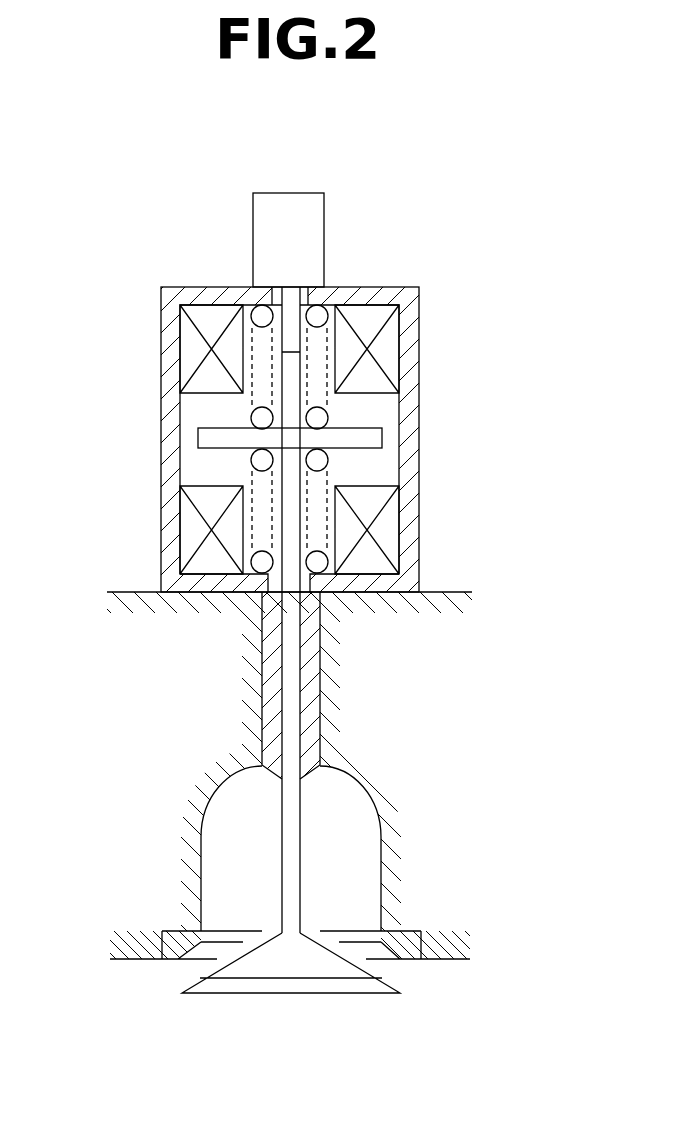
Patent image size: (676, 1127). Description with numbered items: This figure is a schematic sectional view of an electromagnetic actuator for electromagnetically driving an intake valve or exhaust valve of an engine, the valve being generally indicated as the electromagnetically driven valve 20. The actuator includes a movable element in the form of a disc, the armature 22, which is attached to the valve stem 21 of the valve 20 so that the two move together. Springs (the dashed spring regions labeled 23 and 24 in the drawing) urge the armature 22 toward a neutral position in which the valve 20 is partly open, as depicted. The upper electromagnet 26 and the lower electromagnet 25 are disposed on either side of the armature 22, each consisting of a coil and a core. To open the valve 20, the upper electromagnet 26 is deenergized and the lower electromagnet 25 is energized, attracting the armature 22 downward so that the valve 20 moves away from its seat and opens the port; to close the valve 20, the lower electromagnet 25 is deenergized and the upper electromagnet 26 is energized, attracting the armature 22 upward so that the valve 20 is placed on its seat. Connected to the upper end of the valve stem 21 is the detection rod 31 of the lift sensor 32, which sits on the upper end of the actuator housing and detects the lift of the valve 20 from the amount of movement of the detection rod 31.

The electromagnetically driven valve 20 is at (276, 1012).
The valve stem 21 is at (292, 843).
The armature 22 is at (368, 437).
The upper spring 23 is at (258, 402).
The lower spring 24 is at (260, 473).
The lower electromagnet 25 is at (195, 530).
The upper electromagnet 26 is at (195, 352).
The detection rod 31 is at (288, 342).
The lift sensor 32 is at (310, 242).